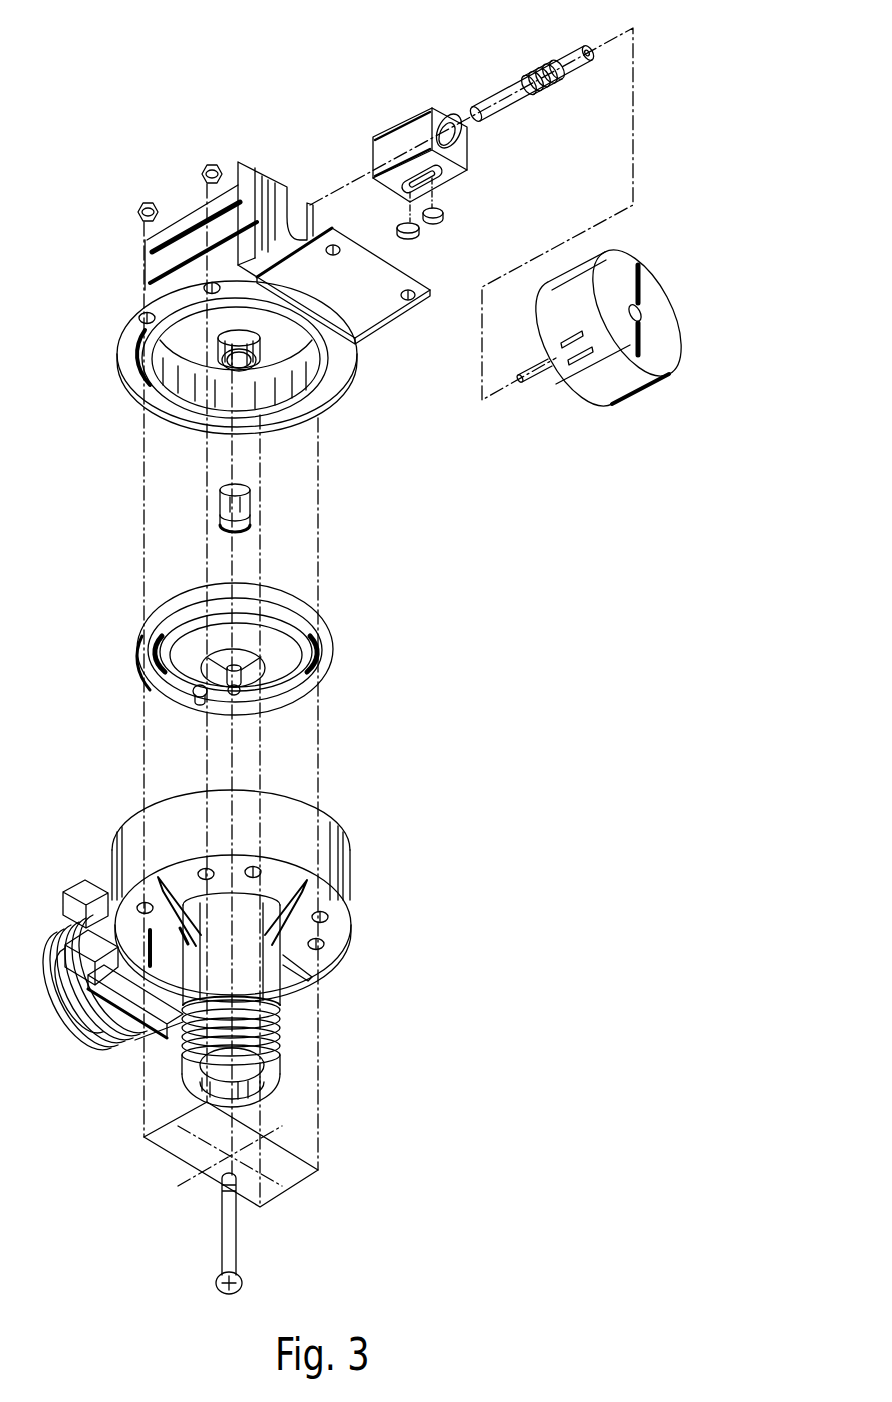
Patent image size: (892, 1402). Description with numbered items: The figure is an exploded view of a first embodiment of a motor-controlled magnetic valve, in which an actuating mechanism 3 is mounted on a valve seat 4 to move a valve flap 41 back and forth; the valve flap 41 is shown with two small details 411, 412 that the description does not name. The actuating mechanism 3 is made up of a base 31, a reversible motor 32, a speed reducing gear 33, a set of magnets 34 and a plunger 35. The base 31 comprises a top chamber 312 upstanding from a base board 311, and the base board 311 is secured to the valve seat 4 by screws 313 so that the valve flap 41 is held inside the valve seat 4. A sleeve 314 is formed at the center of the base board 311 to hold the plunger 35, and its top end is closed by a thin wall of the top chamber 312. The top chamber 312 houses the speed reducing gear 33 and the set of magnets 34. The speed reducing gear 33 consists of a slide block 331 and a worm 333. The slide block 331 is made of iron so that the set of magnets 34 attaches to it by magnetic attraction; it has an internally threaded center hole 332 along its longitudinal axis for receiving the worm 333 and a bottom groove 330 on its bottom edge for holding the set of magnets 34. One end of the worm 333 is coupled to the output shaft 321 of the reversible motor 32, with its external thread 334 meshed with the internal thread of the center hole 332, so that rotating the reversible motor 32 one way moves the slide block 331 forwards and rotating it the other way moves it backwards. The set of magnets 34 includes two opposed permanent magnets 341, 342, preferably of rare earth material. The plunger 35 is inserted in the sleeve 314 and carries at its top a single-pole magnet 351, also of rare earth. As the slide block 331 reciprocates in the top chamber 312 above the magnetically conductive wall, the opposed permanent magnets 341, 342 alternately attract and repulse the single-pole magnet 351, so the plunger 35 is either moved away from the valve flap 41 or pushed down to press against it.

The actuating mechanism 3 is at (406, 419).
The base 31 is at (230, 298).
The base board 311 is at (130, 335).
The top chamber 312 is at (172, 252).
The screws 313 is at (237, 1232).
The sleeve 314 is at (236, 367).
The reversible motor 32 is at (622, 354).
The output shaft 321 is at (523, 383).
The speed reducing gear 33 is at (467, 113).
The bottom groove 330 is at (448, 185).
The slide block 331 is at (392, 140).
The internally threaded center hole 332 is at (470, 143).
The worm 333 is at (524, 67).
The external thread 334 is at (455, 108).
The set of magnets 34 is at (459, 230).
The permanent magnet 341 is at (412, 236).
The permanent magnet 342 is at (426, 233).
The plunger 35 is at (310, 520).
The single-pole magnet 351 is at (251, 483).
The valve seat 4 is at (335, 828).
The valve flap 41 is at (230, 671).
The hub spider 411 is at (236, 692).
The locating pin 412 is at (196, 703).